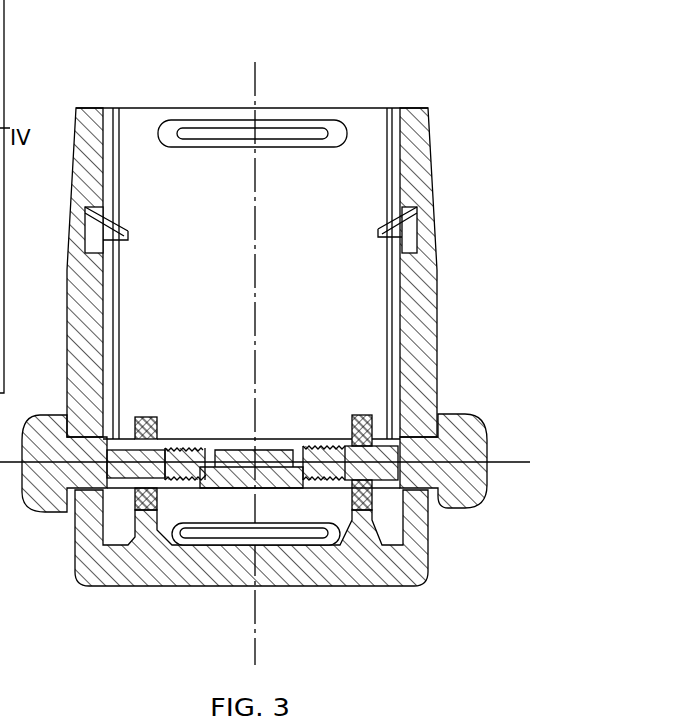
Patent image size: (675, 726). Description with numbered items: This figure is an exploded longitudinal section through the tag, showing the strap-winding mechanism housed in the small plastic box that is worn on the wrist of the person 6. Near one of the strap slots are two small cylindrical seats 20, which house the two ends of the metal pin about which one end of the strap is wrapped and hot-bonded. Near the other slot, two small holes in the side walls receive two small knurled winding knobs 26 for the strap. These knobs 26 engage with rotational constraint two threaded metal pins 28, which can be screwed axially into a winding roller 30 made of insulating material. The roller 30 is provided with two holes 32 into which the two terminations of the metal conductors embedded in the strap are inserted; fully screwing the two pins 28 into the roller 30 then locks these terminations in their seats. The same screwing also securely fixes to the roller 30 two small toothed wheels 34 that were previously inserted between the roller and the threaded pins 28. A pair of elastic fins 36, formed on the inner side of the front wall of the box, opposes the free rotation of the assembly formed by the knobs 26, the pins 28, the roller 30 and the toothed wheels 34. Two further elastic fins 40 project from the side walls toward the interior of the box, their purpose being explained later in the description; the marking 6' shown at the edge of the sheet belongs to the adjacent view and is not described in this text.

The cylindrical seats 20 is at (282, 127).
The elastic fins 40 is at (390, 227).
The knurled winding knobs 26 is at (50, 492).
The threaded metal pins 28 is at (104, 520).
The winding roller 30 is at (207, 476).
The holes 32 is at (310, 440).
The toothed wheels 34 is at (135, 425).
The elastic fins 36 is at (365, 520).
The mounting element 6' is at (11, 521).
The person 6 is at (3, 609).